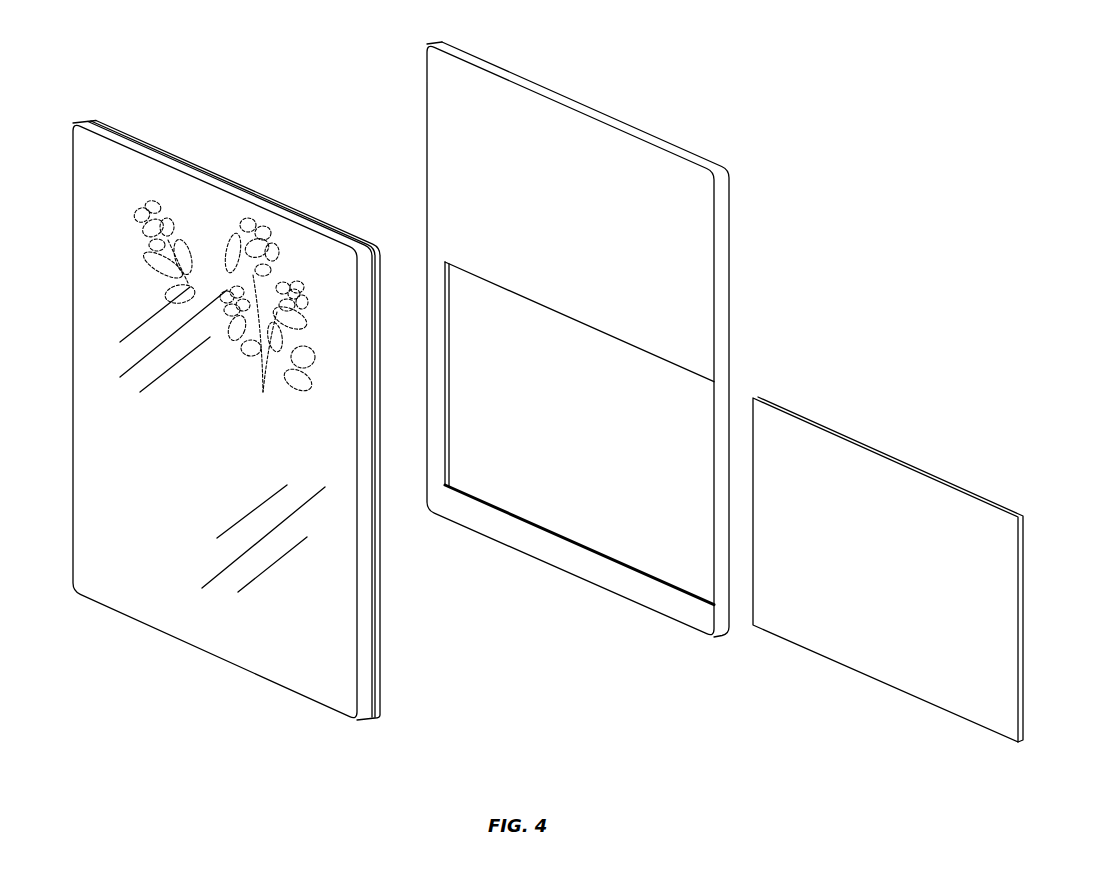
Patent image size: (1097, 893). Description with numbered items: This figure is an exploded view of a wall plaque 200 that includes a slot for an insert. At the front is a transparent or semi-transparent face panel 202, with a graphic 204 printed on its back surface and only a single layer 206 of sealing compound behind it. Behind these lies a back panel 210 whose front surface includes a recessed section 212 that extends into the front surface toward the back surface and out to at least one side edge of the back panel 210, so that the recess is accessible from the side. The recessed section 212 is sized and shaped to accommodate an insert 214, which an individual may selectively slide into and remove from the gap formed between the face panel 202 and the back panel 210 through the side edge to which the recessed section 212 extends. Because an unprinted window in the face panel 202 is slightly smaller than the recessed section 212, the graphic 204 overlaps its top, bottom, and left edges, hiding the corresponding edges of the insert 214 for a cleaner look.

The wall plaque 200 is at (311, 80).
The face panel 202 is at (323, 688).
The graphic 204 is at (374, 688).
The layer of sealing compound 206 is at (379, 645).
The back panel 210 is at (578, 351).
The recessed section 212 is at (689, 577).
The insert 214 is at (997, 704).